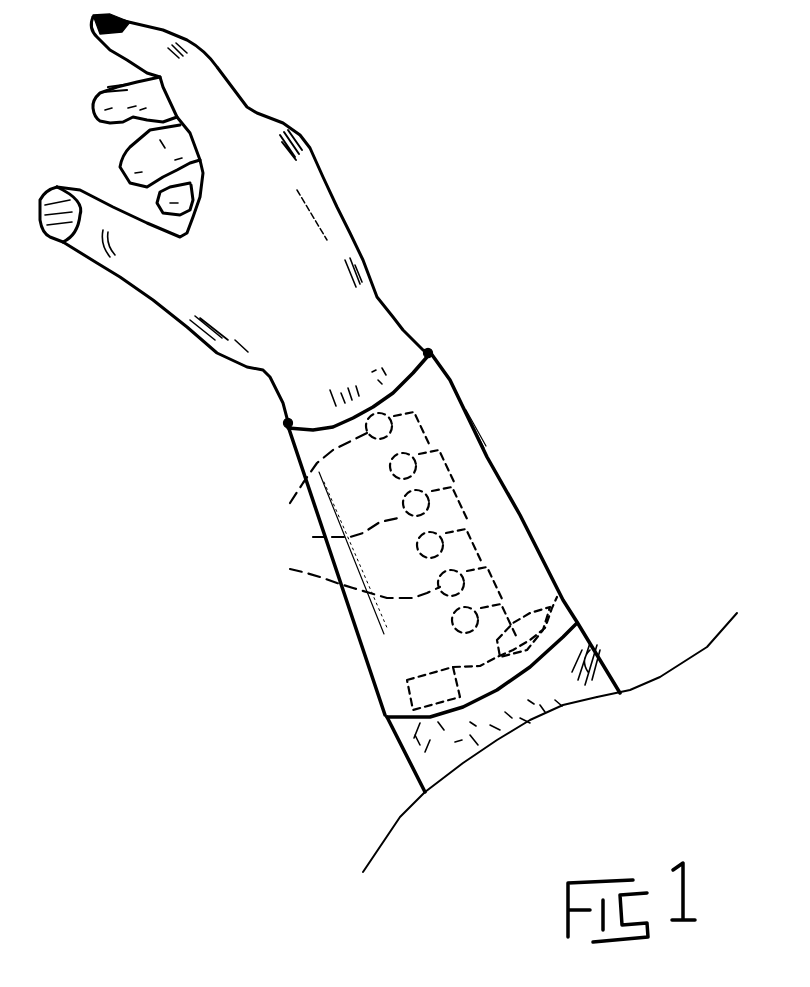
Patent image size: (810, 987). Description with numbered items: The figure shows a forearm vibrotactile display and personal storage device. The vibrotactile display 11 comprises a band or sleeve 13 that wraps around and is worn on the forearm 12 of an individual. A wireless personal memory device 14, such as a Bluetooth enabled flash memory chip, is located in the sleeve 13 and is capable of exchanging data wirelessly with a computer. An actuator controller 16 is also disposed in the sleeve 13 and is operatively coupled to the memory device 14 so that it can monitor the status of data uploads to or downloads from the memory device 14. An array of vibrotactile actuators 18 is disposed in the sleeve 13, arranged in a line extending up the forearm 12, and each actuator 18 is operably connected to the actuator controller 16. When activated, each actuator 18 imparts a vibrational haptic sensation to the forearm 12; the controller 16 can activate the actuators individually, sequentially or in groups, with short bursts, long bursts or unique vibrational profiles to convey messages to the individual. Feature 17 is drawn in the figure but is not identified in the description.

The vibrotactile display 11 is at (538, 383).
The forearm 12 is at (635, 631).
The band or sleeve 13 is at (515, 527).
The wireless personal memory device 14 is at (397, 760).
The actuator controller 16 is at (560, 600).
The stay pocket 17 is at (490, 455).
The vibrotactile actuators 18 is at (313, 537).